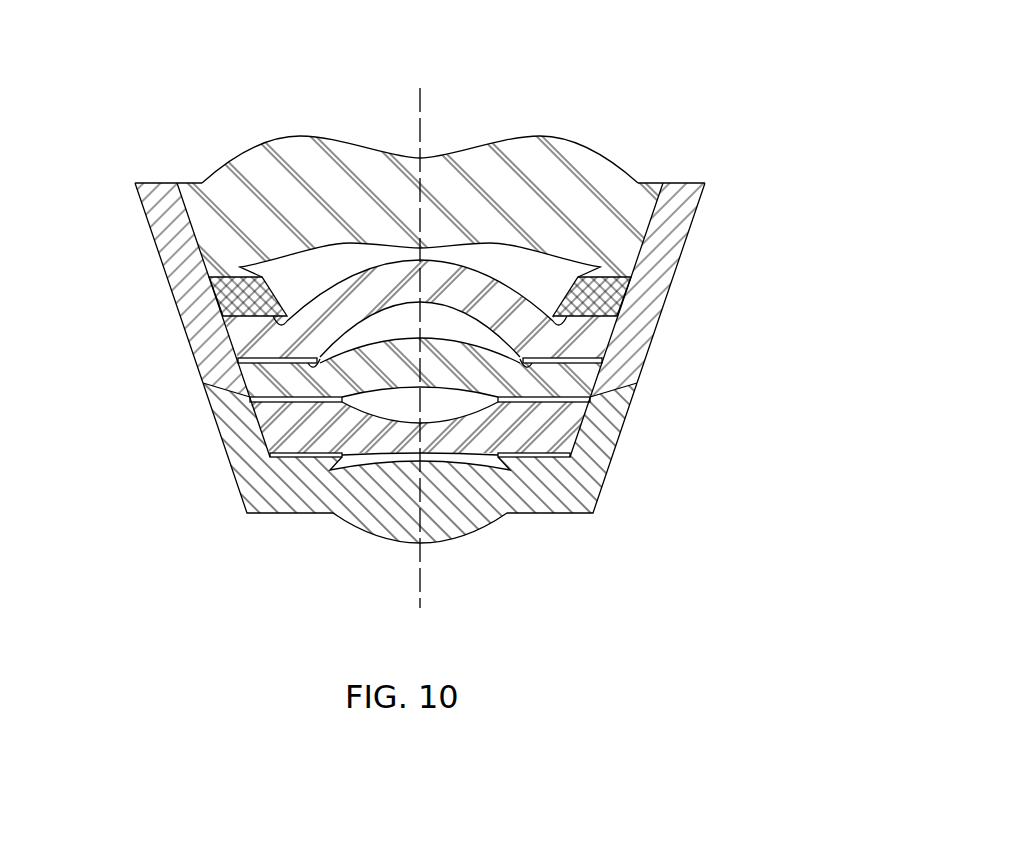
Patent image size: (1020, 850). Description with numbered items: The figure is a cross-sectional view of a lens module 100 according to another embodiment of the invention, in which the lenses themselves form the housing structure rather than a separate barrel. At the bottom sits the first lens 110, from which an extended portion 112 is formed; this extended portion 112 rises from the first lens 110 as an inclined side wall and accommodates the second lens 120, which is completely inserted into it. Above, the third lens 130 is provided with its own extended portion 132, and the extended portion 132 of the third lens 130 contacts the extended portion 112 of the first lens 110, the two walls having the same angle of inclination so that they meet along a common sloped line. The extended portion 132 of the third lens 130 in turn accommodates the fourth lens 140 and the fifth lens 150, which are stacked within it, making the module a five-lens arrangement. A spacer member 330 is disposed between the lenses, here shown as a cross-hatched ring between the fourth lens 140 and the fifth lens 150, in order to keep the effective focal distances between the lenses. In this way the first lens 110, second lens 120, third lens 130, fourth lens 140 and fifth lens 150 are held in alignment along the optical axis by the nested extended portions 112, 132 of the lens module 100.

The lens module 100 is at (454, 329).
The first lens 110 is at (355, 511).
The extended portion 112 is at (230, 417).
The second lens 120 is at (565, 428).
The third lens 130 is at (578, 378).
The extended portion 132 is at (203, 330).
The fourth lens 140 is at (593, 340).
The fifth lens 150 is at (628, 218).
The spacer member 330 is at (627, 280).